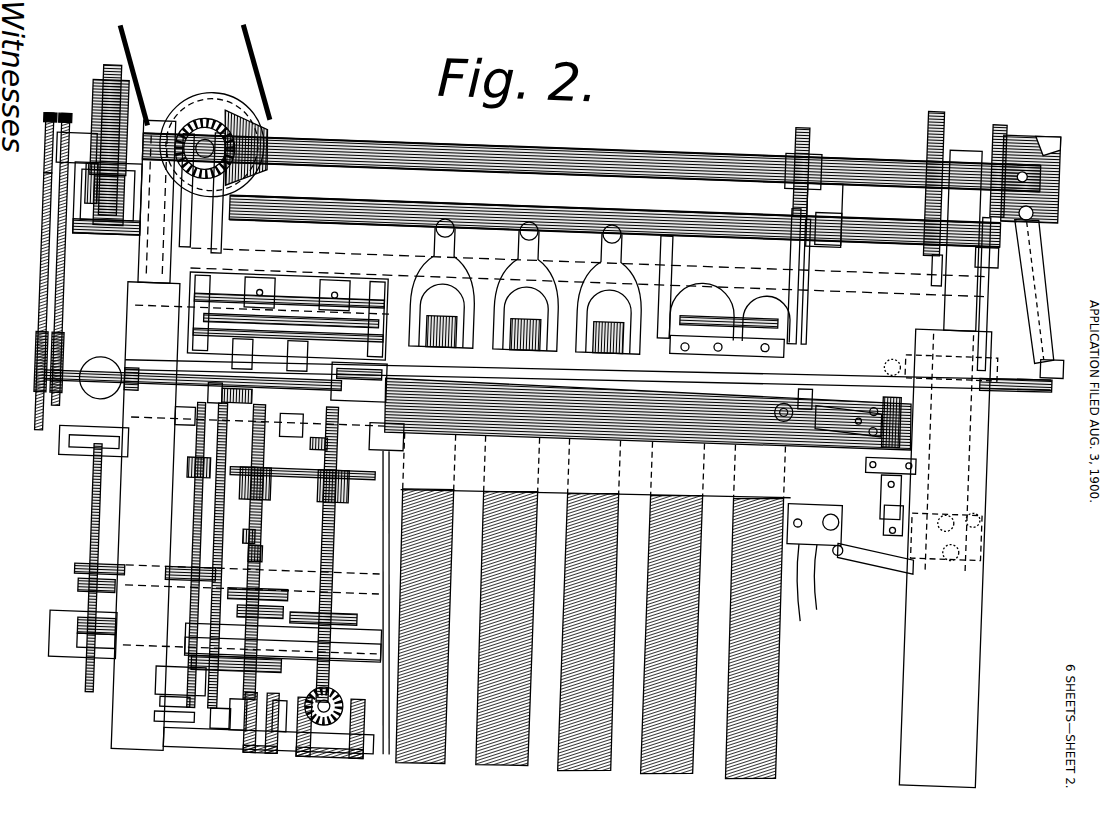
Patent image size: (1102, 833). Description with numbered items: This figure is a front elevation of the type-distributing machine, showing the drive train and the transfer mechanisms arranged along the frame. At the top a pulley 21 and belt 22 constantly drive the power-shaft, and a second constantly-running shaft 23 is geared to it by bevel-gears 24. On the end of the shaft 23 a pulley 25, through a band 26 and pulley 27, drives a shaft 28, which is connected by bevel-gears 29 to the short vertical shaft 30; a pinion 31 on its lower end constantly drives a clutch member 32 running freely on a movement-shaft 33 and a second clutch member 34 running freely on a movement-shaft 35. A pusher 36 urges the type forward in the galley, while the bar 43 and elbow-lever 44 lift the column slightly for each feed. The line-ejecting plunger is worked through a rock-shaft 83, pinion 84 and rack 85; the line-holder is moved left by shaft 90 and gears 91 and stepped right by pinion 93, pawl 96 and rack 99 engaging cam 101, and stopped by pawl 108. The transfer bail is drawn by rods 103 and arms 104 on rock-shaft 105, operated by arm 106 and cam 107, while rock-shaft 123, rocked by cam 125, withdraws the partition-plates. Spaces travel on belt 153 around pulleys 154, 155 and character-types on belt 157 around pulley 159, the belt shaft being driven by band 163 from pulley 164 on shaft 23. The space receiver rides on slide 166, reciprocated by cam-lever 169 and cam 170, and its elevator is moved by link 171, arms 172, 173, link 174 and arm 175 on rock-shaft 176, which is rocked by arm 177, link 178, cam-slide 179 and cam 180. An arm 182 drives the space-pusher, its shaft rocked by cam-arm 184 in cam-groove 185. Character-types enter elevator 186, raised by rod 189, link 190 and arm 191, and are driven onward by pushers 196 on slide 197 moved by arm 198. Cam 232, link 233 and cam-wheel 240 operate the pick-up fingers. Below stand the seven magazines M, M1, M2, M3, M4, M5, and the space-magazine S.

The pulley 21 is at (258, 100).
The belt 22 is at (268, 72).
The constantly-running shaft 23 is at (604, 132).
The bevel-gears 24 is at (266, 124).
The pulley 25 is at (43, 127).
The band 26 is at (50, 280).
The pulley 27 is at (60, 374).
The shaft 28 is at (106, 356).
The bevel-gears 29 is at (359, 385).
The short vertical shaft 30 is at (302, 487).
The pinion 31 is at (285, 488).
The clutch member 32 is at (395, 452).
The movement-shaft 33 is at (354, 504).
The clutch member 34 is at (233, 556).
The movement-shaft 35 is at (283, 530).
The pusher 36 is at (84, 190).
The bar 43 is at (210, 740).
The elbow-lever 44 is at (208, 700).
The rock-shaft 83 is at (110, 512).
The pinion 84 is at (100, 620).
The rack 85 is at (100, 636).
The shaft 90 is at (210, 489).
The gears 91 is at (204, 462).
The pinion 93 is at (190, 564).
The pawl 96 is at (120, 562).
The rack 99 is at (99, 582).
The cam 101 is at (295, 596).
The rods 103 is at (195, 412).
The arms 104 is at (92, 432).
The rock-shaft 105 is at (235, 539).
The arm 106 is at (272, 580).
The cam 107 is at (322, 606).
The pawl 108 is at (274, 417).
The rock-shaft 123 is at (282, 656).
The cam 125 is at (404, 626).
The belt 153 is at (530, 419).
The pulley 154 is at (200, 320).
The pulley 155 is at (792, 395).
The belt 157 is at (845, 405).
The pulley 159 is at (884, 404).
The band 163 is at (76, 258).
The pulley 164 is at (64, 110).
The slide 166 is at (820, 360).
The cam-lever 169 is at (812, 236).
The cam 170 is at (812, 104).
The link 171 is at (813, 568).
The arms 172 is at (837, 579).
The arm 173 is at (858, 526).
The link 174 is at (898, 533).
The arm 175 is at (978, 516).
The rock-shaft 176 is at (988, 526).
The arm 177 is at (998, 482).
The link 178 is at (1004, 424).
The cam-slide 179 is at (996, 270).
The cam 180 is at (1004, 96).
The arm 182 is at (1060, 212).
The cam-arm 184 is at (1066, 142).
The cam-groove 185 is at (1043, 164).
The elevator 186 is at (924, 423).
The vertically-movable rod 189 is at (915, 471).
The link 190 is at (873, 504).
The arm 191 is at (922, 480).
The pushers 196 is at (928, 338).
The slide 197 is at (1050, 335).
The arm 198 is at (1054, 262).
The cam 232 is at (118, 64).
The pivoted link 233 is at (128, 186).
The cam-wheel 240 is at (128, 82).
The magazine M is at (259, 738).
The magazine M1 is at (330, 739).
The magazine M2 is at (423, 640).
The magazine M3 is at (505, 646).
The magazine M4 is at (589, 648).
The lower-case magazine M5 is at (670, 652).
The space-magazine S is at (804, 680).